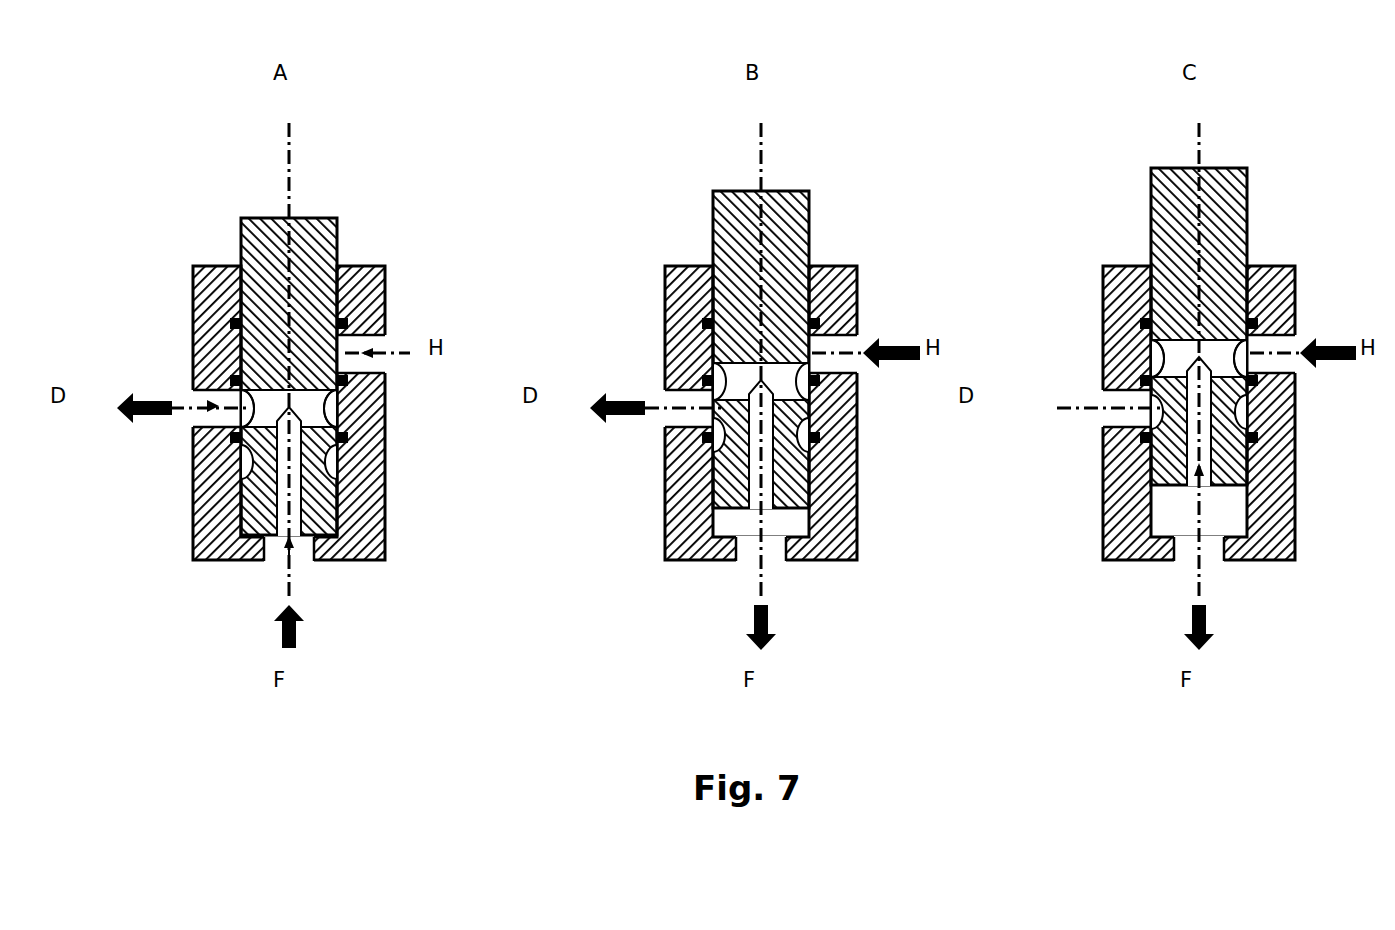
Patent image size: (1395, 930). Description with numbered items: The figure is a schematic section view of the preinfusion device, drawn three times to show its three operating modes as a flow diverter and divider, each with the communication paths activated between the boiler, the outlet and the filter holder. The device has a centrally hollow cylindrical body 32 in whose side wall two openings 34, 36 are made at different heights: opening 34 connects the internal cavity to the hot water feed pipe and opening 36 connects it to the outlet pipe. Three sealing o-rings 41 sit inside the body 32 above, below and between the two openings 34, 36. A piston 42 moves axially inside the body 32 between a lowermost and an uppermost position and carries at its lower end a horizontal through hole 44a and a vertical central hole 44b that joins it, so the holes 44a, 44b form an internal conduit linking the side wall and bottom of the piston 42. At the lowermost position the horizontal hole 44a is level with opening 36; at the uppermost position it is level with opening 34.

The cylindrical body 32 is at (211, 283).
The opening 34 is at (388, 352).
The opening 36 is at (210, 404).
The sealing o-rings 41 is at (818, 323).
The piston 42 is at (318, 232).
The horizontal through hole 44a is at (334, 408).
The vertical central hole 44b is at (296, 547).